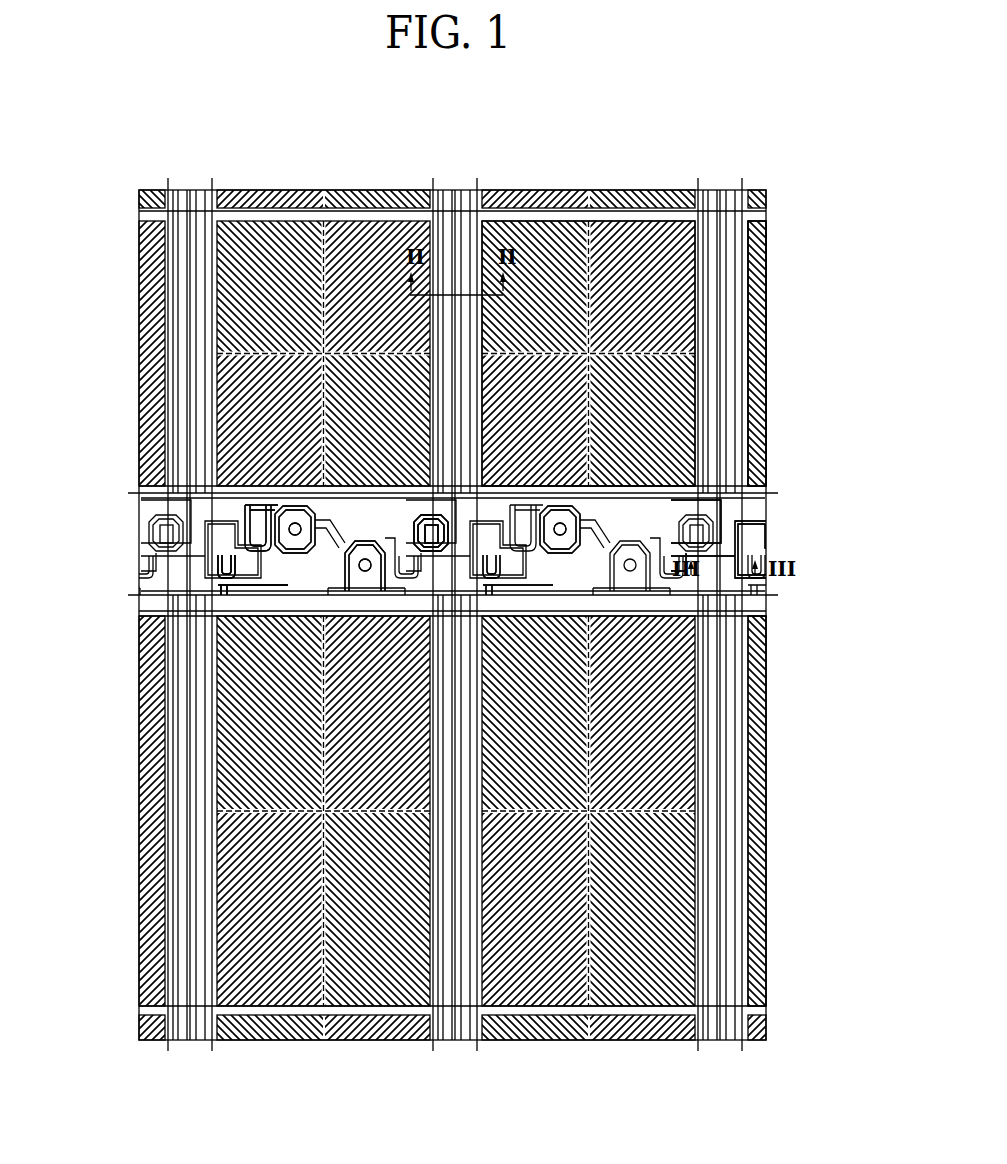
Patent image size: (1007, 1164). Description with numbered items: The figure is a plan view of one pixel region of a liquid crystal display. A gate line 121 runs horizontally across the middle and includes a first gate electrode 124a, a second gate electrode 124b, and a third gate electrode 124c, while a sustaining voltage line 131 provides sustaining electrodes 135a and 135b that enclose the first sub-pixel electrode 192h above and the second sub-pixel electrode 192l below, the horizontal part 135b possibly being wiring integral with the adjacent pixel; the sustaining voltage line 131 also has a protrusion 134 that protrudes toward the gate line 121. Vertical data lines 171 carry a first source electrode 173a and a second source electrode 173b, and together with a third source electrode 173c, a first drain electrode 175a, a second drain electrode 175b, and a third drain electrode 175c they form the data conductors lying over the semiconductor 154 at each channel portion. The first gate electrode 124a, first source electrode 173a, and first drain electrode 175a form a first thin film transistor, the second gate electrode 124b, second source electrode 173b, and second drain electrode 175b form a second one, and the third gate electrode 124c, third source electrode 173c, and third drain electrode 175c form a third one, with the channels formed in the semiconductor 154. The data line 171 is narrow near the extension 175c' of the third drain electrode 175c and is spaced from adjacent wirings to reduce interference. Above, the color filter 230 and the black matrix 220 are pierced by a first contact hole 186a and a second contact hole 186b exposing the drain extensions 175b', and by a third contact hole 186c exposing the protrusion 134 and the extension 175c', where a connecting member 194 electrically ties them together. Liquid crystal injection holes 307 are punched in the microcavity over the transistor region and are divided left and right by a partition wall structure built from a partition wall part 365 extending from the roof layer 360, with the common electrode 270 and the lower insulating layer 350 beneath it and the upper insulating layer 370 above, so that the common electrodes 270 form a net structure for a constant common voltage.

The data line 171 is at (197, 180).
The first sub-pixel electrode 192h is at (266, 235).
The second sub-pixel electrode 192l is at (368, 993).
The sustaining electrode 135a is at (160, 285).
The horizontal part of the sustaining electrode 135b is at (345, 212).
The black matrix 220 is at (476, 245).
The color filter 230 is at (590, 225).
The lower insulating layer 350 is at (767, 142).
The roof layer 360 is at (757, 353).
The upper insulating layer 370 is at (757, 811).
The first gate electrode 124a is at (237, 500).
The second gate electrode 124b is at (142, 540).
The third gate electrode 124c is at (353, 590).
The gate line 121 is at (142, 558).
The sustaining voltage line 131 is at (320, 497).
The protrusion 134 is at (433, 505).
The semiconductor 154 is at (212, 558).
The first source electrode 173a is at (264, 590).
The second source electrode 173b is at (197, 513).
The third source electrode 173c is at (388, 590).
The first drain electrode 175a is at (258, 520).
The second drain electrode 175b is at (188, 617).
The extension of the drain electrode 175b' is at (352, 487).
The third drain electrode 175c is at (406, 513).
The extension of the third drain electrode 175c' is at (523, 525).
The first contact hole 186a is at (287, 545).
The second contact hole 186b is at (353, 583).
The third contact hole 186c is at (440, 598).
The common electrode 270 is at (752, 487).
The liquid crystal injection hole 307 is at (771, 502).
The connecting member 194 is at (700, 512).
The partition wall part 365 is at (718, 533).